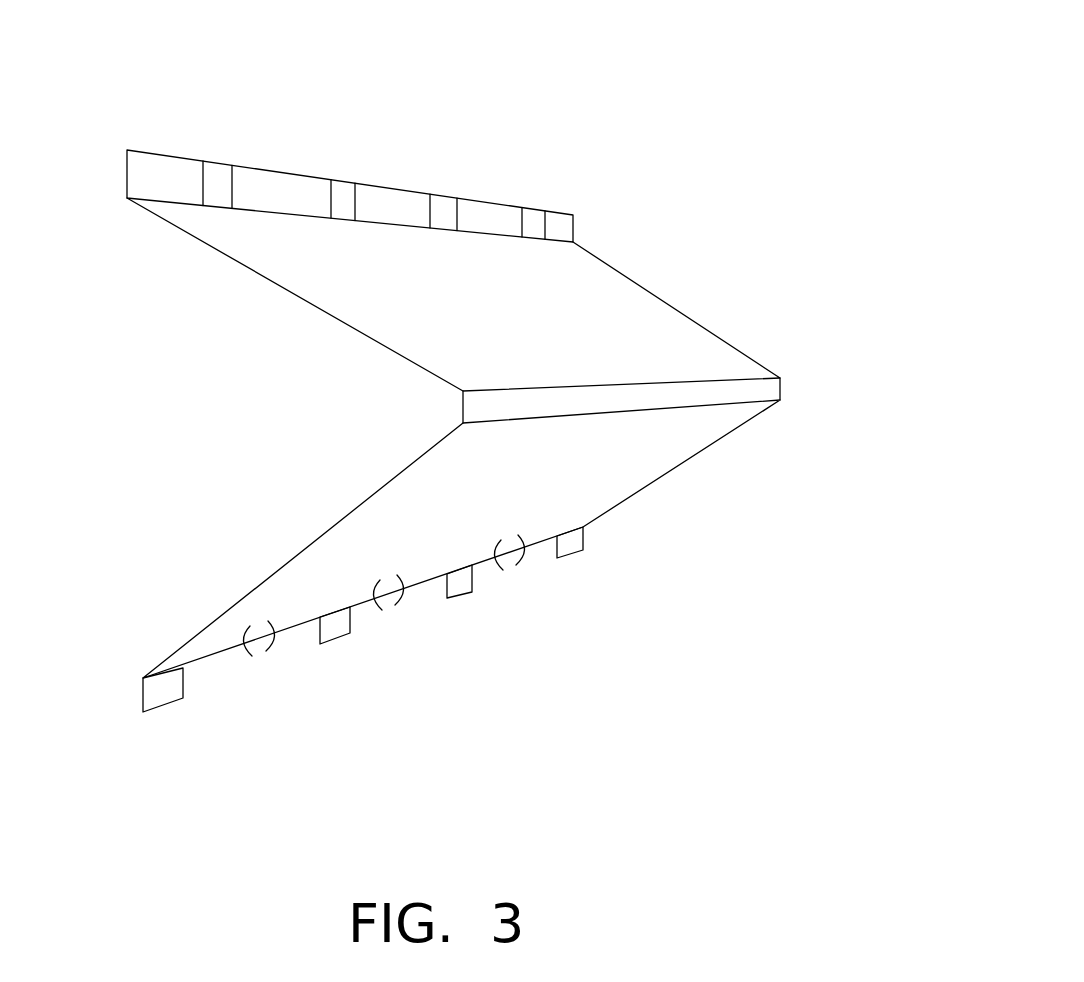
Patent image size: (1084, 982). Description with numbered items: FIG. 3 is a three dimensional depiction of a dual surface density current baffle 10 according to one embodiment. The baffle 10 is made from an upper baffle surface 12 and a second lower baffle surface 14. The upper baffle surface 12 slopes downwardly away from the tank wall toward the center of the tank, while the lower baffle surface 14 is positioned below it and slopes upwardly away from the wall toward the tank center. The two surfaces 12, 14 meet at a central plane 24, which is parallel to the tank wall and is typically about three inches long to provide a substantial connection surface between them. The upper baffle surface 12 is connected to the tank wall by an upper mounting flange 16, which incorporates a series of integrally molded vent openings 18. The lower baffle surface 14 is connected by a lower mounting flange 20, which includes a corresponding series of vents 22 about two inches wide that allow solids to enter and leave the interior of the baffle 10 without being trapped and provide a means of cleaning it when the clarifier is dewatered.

The dual surface density current baffle 10 is at (548, 90).
The upper baffle surface 12 is at (660, 295).
The lower baffle surface 14 is at (652, 485).
The upper mounting flange 16 is at (577, 223).
The vent openings 18 is at (342, 188).
The lower mounting flange 20 is at (168, 703).
The vents 22 is at (263, 655).
The central plane 24 is at (780, 392).